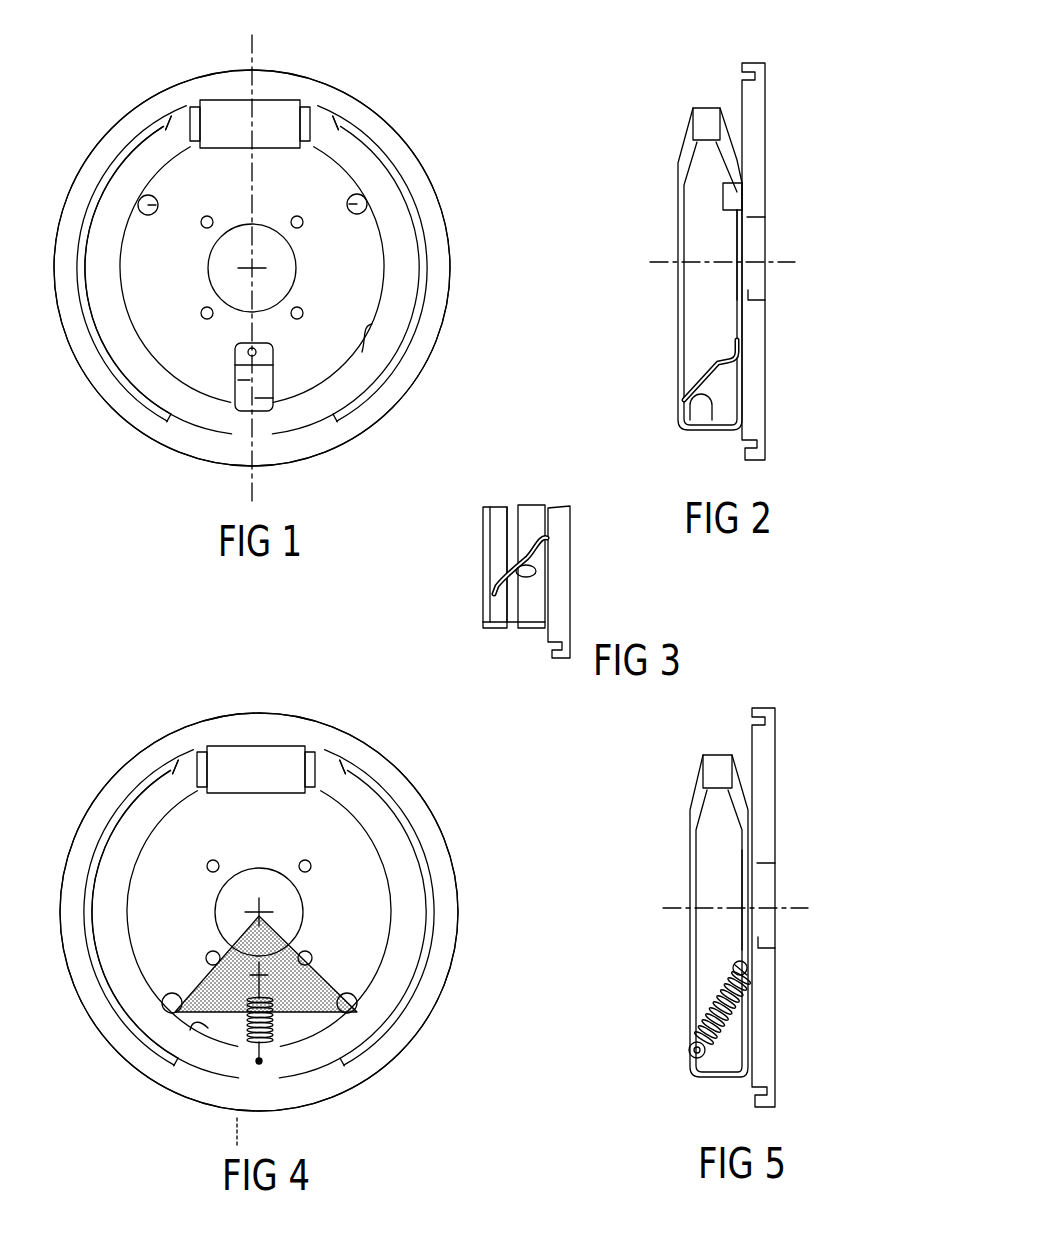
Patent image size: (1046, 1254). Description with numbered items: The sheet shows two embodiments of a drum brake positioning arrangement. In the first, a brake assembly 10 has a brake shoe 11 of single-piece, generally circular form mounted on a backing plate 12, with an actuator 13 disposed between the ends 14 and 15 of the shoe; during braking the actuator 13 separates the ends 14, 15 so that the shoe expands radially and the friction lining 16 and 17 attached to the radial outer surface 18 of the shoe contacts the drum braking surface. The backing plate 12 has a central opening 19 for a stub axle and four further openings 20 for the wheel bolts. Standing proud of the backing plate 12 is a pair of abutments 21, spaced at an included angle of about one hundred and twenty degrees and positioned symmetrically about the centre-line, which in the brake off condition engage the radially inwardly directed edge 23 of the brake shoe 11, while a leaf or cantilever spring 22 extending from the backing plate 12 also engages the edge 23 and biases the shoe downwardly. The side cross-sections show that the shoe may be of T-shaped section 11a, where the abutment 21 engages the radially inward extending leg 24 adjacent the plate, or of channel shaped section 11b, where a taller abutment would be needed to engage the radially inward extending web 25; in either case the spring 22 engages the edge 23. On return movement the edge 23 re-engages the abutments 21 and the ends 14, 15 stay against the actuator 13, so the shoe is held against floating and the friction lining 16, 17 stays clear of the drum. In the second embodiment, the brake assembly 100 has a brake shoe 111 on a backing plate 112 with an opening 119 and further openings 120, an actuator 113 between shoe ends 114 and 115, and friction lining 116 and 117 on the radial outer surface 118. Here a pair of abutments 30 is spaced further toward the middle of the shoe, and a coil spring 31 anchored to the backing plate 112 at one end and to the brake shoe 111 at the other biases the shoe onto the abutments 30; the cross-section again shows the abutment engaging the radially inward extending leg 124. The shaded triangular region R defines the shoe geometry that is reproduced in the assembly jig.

In FIG. 1, the brake assembly 10 is at (428, 127).
In FIG. 1, the brake shoe 11 is at (150, 377).
In FIG. 2, the T-shaped section brake shoe 11a is at (682, 243).
In FIG. 5, the T-shaped section brake shoe 11a is at (690, 875).
In FIG. 3, the channel shaped section brake shoe 11b is at (497, 630).
In FIG. 1, the backing plate 12 is at (392, 395).
In FIG. 2, the backing plate 12 is at (755, 130).
In FIG. 3, the backing plate 12 is at (560, 525).
In FIG. 1, the actuator 13 is at (228, 117).
In FIG. 1, the end of brake shoe 14 is at (158, 148).
In FIG. 1, the end of brake shoe 15 is at (328, 138).
In FIG. 1, the friction lining 16 is at (110, 173).
In FIG. 1, the friction lining 17 is at (407, 190).
In FIG. 1, the radial outer surface 18 is at (305, 428).
In FIG. 1, the central opening 19 is at (236, 300).
In FIG. 2, the central opening 19 is at (762, 296).
In FIG. 1, the further openings 20 is at (200, 230).
In FIG. 1, the abutments 21 is at (155, 200).
In FIG. 2, the abutments 21 is at (725, 195).
In FIG. 1, the leaf or cantilever spring 22 is at (237, 366).
In FIG. 2, the leaf or cantilever spring 22 is at (678, 395).
In FIG. 3, the leaf or cantilever spring 22 is at (487, 568).
In FIG. 1, the radially inwardly directed face or edge 23 is at (362, 352).
In FIG. 2, the radially inwardly directed face or edge 23 is at (710, 421).
In FIG. 3, the radially inwardly directed face or edge 23 is at (538, 575).
In FIG. 4, the radially inwardly directed face or edge 23 is at (208, 1028).
In FIG. 2, the radially inward extending leg 24 is at (742, 247).
In FIG. 3, the radially inward extending web 25 is at (512, 602).
In FIG. 4, the abutments 30 is at (167, 993).
In FIG. 4, the coil spring 31 is at (283, 1023).
In FIG. 5, the coil spring 31 is at (710, 1000).
In FIG. 4, the brake assembly 100 is at (314, 698).
In FIG. 4, the brake shoe 111 is at (130, 990).
In FIG. 4, the backing plate 112 is at (410, 1027).
In FIG. 5, the backing plate 112 is at (767, 782).
In FIG. 4, the actuator 113 is at (245, 758).
In FIG. 4, the shoe end 114 is at (173, 793).
In FIG. 4, the shoe end 115 is at (347, 787).
In FIG. 4, the friction lining 116 is at (122, 818).
In FIG. 4, the friction lining 117 is at (408, 832).
In FIG. 4, the radial outer surface 118 is at (330, 1067).
In FIG. 4, the opening 119 is at (268, 878).
In FIG. 5, the opening 119 is at (770, 938).
In FIG. 4, the further openings 120 is at (207, 872).
In FIG. 5, the radially inward extending leg 124 is at (750, 893).
In FIG. 4, the shaded triangular region R is at (230, 1003).